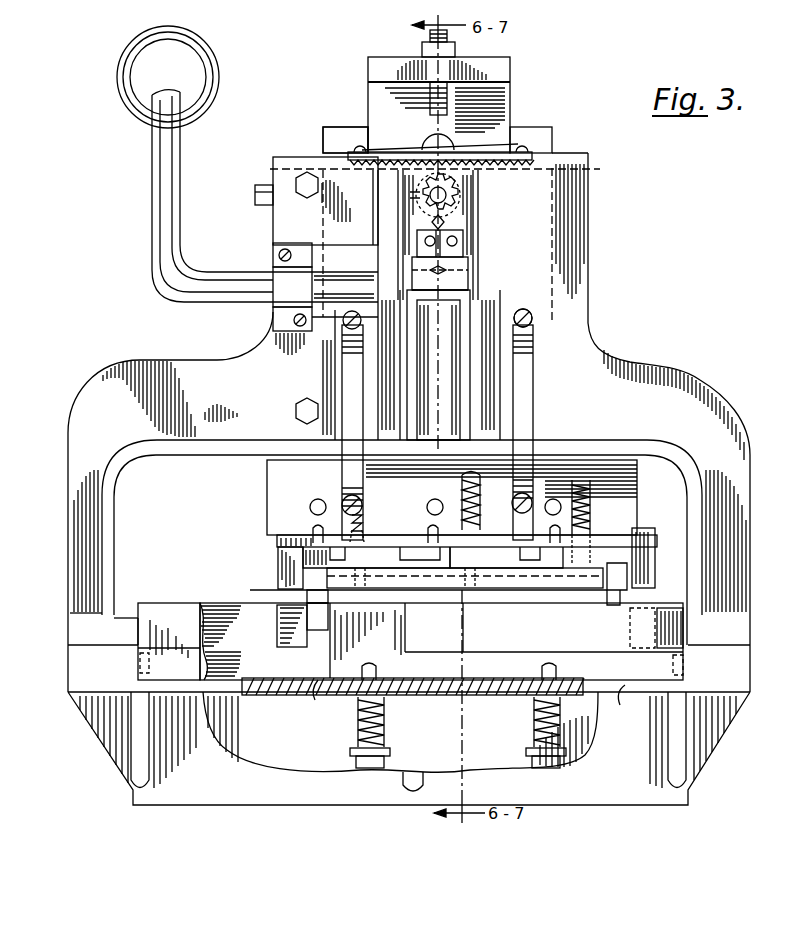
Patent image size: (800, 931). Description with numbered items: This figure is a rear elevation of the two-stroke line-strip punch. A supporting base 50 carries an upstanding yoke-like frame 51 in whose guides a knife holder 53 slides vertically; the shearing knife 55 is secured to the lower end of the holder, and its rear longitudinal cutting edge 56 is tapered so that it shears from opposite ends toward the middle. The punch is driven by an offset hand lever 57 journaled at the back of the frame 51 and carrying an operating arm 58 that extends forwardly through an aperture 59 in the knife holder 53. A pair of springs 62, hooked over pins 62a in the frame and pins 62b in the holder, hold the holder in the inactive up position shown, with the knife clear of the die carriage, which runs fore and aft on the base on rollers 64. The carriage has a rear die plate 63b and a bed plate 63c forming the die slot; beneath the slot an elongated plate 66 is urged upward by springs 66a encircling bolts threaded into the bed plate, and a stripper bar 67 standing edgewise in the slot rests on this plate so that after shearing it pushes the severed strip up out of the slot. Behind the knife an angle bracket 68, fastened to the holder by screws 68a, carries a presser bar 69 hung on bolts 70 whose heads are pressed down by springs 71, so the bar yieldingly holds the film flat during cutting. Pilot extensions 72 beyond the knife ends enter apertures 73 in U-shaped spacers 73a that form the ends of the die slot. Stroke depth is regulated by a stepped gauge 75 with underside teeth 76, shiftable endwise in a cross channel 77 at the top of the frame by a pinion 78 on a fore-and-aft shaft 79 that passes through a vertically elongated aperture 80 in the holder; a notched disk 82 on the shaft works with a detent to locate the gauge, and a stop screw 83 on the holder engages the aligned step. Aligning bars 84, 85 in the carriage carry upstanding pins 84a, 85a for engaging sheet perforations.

The supporting base 50 is at (652, 760).
The yoke-like frame 51 is at (680, 384).
The knife holder 53 is at (323, 142).
The shearing knife 55 is at (277, 540).
The rear longitudinal cutting edge 56 is at (530, 575).
The offset hand lever 57 is at (168, 185).
The operating arm 58 is at (465, 256).
The aperture 59 is at (428, 320).
The springs 62 is at (342, 350).
The pins 62a is at (535, 320).
The pins 62b is at (350, 505).
The rear die plate 63b is at (176, 610).
The bed plate 63c is at (485, 670).
The roller 64 is at (140, 659).
The elongated plate 66 is at (418, 675).
The springs 66a is at (358, 732).
The stripper bar 67 is at (368, 612).
The angle bracket 68 is at (492, 545).
The screws 68a is at (313, 536).
The presser bar 69 is at (492, 586).
The bolts 70 is at (362, 532).
The springs 71 is at (362, 510).
The pilot extensions 72 is at (278, 568).
The apertures 73 is at (290, 608).
The U-shaped spacers 73a is at (469, 701).
The stepped gauge 75 is at (378, 146).
The teeth 76 is at (368, 170).
The cross channel 77 is at (273, 166).
The pinion 78 is at (462, 186).
The fore-and-aft shaft 79 is at (456, 199).
The vertically elongated aperture 80 is at (442, 140).
The notched disk 82 is at (418, 195).
The stop screw 83 is at (430, 98).
The aligning bar 84 is at (629, 619).
The upstanding pin 84a is at (617, 582).
The aligning bar 85 is at (315, 616).
The upstanding pin 85a is at (318, 603).